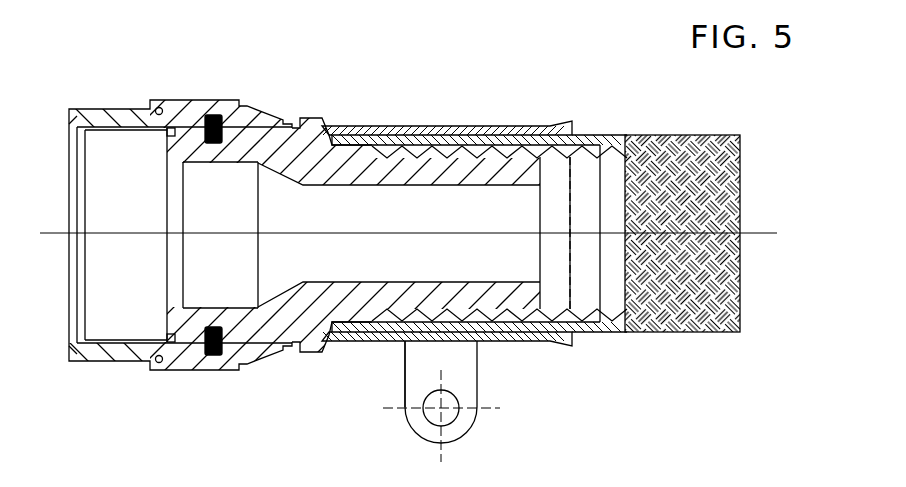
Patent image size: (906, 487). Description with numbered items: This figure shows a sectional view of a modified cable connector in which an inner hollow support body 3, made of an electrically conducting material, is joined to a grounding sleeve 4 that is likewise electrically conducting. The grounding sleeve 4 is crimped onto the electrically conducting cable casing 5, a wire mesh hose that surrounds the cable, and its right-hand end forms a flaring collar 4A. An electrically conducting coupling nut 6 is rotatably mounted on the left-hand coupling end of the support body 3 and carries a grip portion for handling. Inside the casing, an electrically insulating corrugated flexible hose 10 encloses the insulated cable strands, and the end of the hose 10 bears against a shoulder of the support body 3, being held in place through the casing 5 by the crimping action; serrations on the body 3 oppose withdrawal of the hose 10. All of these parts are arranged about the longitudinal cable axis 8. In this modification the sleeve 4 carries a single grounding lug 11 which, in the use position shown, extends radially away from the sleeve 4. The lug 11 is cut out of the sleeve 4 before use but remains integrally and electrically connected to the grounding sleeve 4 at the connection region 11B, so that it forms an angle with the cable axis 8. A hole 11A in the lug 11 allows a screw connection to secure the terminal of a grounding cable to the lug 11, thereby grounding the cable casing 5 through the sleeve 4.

The inner hollow support body 3 is at (334, 293).
The grounding sleeve 4 is at (425, 126).
The flaring collar 4A is at (563, 121).
The cable casing 5 is at (682, 134).
The coupling nut 6 is at (275, 118).
The longitudinal cable axis 8 is at (775, 233).
The corrugated flexible hose 10 is at (588, 292).
The grounding lug 11 is at (478, 370).
The hole 11A is at (450, 418).
The connection region 11B is at (412, 343).